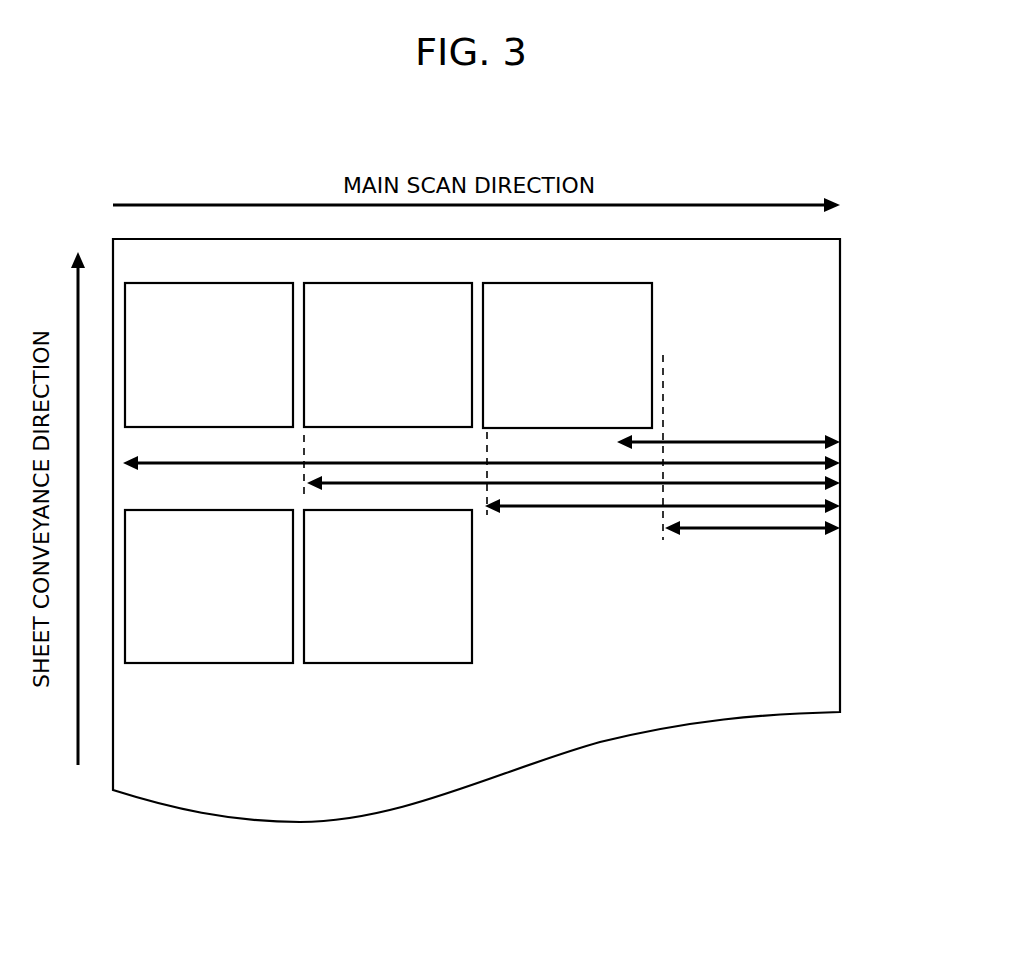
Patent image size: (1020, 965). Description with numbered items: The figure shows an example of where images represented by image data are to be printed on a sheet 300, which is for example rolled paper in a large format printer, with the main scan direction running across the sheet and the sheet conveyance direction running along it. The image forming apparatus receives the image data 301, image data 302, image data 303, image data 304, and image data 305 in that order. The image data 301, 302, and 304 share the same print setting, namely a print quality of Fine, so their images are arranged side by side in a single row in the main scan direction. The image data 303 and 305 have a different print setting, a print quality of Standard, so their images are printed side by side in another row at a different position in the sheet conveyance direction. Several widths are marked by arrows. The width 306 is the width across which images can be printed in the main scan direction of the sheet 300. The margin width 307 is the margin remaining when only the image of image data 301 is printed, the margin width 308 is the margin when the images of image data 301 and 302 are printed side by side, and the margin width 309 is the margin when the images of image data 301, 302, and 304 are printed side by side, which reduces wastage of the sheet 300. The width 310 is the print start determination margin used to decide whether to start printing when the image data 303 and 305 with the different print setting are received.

The sheet 300 is at (842, 341).
The image data 301 is at (206, 282).
The image data 302 is at (378, 282).
The image data 303 is at (188, 664).
The image data 304 is at (548, 282).
The image data 305 is at (356, 664).
The width 306 is at (843, 461).
The margin width 307 is at (843, 484).
The margin width 308 is at (843, 508).
The margin width 309 is at (843, 531).
The width of print start determination margin 310 is at (843, 437).